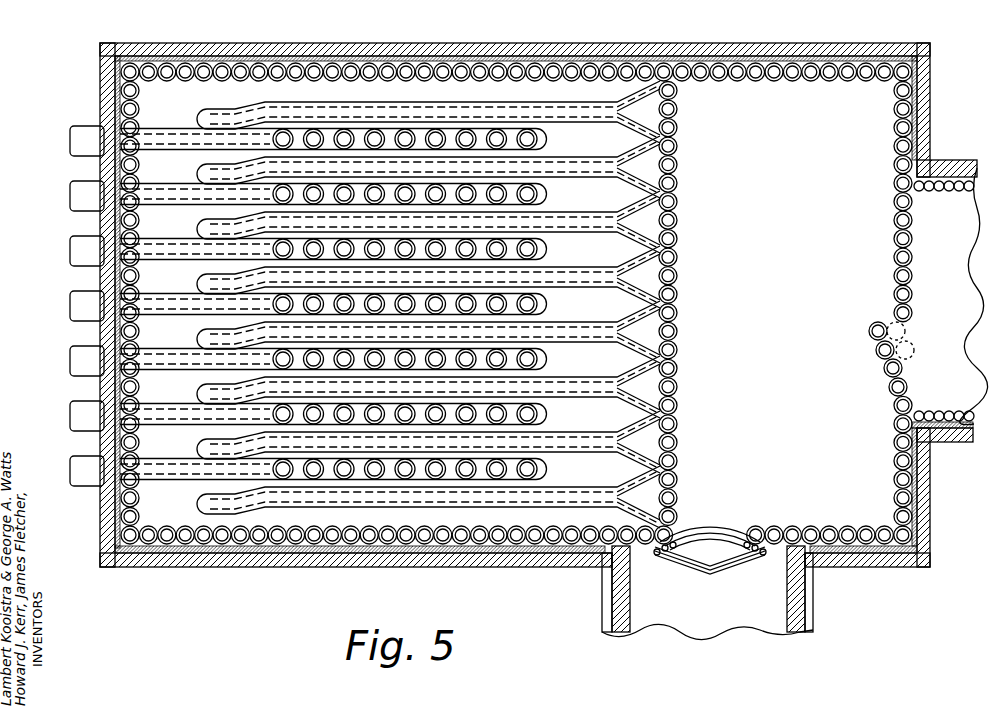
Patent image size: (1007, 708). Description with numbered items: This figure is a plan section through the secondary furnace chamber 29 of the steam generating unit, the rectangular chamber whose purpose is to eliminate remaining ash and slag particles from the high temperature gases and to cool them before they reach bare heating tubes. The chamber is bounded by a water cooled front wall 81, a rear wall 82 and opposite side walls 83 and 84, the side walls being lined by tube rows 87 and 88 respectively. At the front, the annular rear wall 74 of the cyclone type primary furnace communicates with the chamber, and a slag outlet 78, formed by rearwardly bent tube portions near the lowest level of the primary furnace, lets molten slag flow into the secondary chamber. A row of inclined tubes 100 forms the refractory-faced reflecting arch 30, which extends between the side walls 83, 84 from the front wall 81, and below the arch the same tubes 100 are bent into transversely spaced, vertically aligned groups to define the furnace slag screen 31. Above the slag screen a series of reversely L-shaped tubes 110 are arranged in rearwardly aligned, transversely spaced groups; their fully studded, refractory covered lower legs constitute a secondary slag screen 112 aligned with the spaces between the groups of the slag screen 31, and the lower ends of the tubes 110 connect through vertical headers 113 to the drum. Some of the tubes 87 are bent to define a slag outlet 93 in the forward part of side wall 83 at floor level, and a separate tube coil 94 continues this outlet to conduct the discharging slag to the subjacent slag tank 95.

The secondary furnace chamber 29 is at (594, 319).
The reflecting arch 30 is at (680, 455).
The furnace slag screen 31 is at (558, 452).
The annular rear wall 74 is at (913, 218).
The slag outlet 78 is at (888, 320).
The front wall 81 is at (925, 503).
The rear wall 82 is at (102, 80).
The side wall 83 is at (470, 567).
The side wall 84 is at (435, 43).
The tube row 87 is at (237, 541).
The tube row 88 is at (590, 57).
The slag outlet 93 is at (713, 546).
The tube coil 94 is at (733, 560).
The slag tank 95 is at (813, 611).
The inclined tubes 100 is at (678, 325).
The reversely L-shaped tubes 110 is at (537, 140).
The secondary slag screen 112 is at (541, 294).
The vertical headers 113 is at (80, 363).